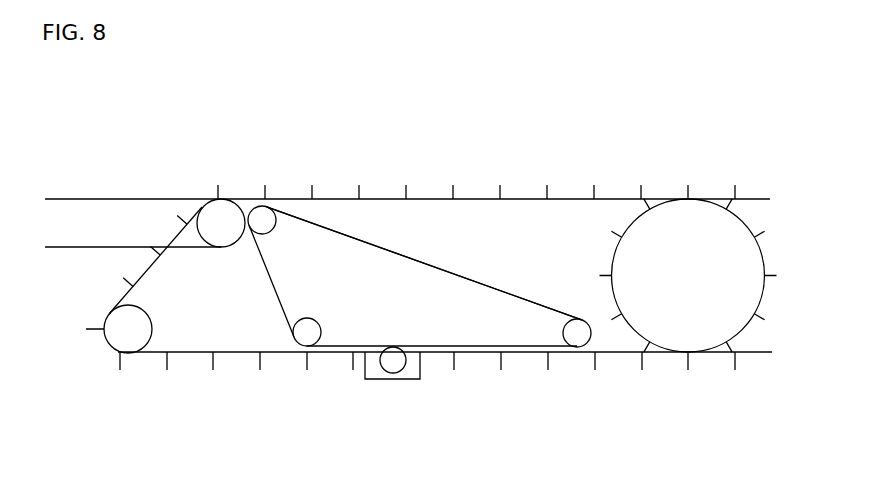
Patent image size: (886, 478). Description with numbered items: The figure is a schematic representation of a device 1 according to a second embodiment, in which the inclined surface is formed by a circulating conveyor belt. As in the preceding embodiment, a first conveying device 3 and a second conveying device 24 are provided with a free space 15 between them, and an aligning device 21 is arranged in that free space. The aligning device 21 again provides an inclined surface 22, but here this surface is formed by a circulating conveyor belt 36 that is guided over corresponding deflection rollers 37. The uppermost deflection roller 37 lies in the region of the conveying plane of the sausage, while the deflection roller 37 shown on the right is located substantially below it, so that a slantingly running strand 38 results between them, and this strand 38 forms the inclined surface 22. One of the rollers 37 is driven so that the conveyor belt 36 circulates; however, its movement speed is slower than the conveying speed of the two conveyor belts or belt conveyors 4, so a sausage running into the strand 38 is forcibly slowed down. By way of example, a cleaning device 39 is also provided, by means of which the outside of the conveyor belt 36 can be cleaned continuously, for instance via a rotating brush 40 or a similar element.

The device 1 is at (491, 133).
The first conveying device 3 is at (678, 176).
The belt conveyors 4 is at (423, 198).
The free space 15 is at (553, 230).
The aligning device 21 is at (455, 263).
The inclined surface 22 is at (510, 291).
The second conveying device 24 is at (118, 184).
The conveyor belt 36 is at (346, 357).
The deflection rollers 37 is at (260, 220).
The strand 38 is at (403, 257).
The cleaning device 39 is at (410, 382).
The rotating brush 40 is at (392, 362).